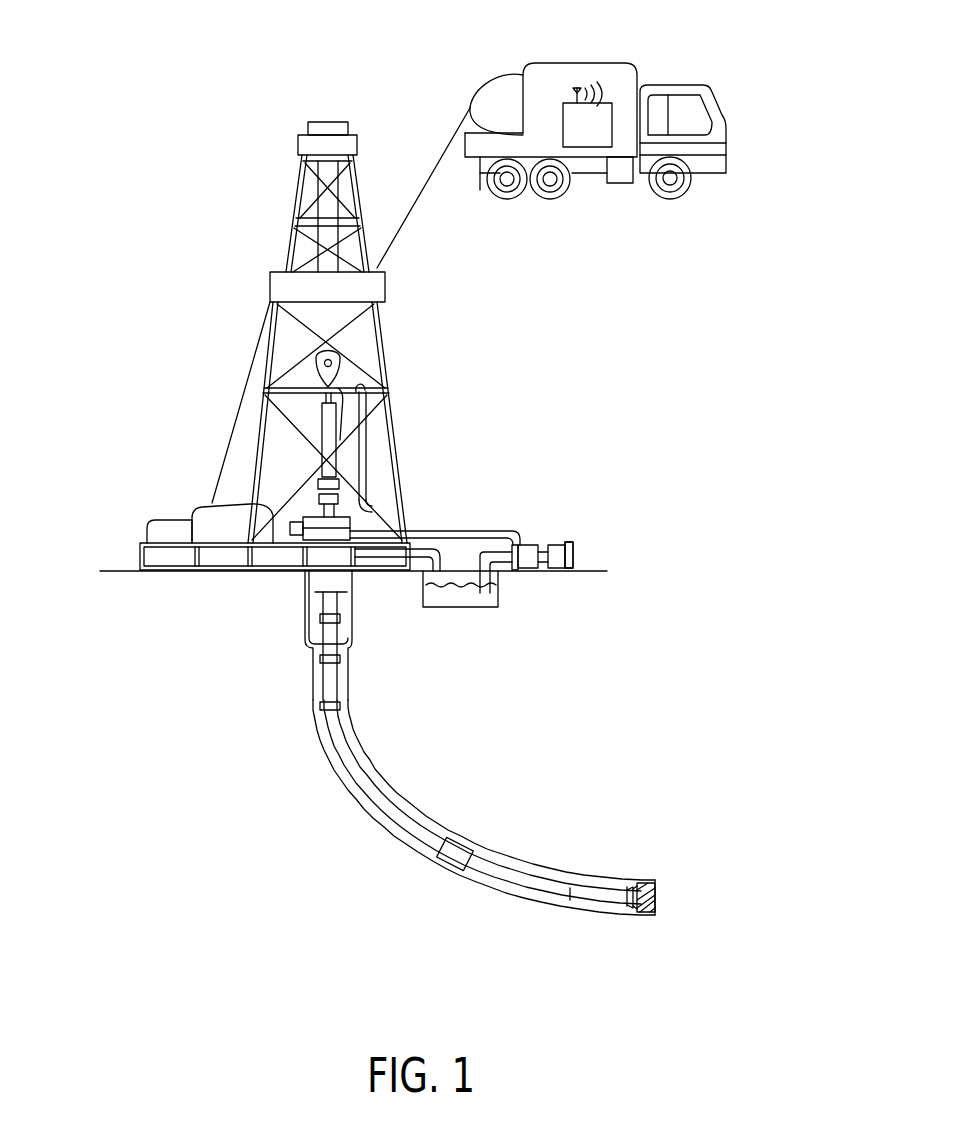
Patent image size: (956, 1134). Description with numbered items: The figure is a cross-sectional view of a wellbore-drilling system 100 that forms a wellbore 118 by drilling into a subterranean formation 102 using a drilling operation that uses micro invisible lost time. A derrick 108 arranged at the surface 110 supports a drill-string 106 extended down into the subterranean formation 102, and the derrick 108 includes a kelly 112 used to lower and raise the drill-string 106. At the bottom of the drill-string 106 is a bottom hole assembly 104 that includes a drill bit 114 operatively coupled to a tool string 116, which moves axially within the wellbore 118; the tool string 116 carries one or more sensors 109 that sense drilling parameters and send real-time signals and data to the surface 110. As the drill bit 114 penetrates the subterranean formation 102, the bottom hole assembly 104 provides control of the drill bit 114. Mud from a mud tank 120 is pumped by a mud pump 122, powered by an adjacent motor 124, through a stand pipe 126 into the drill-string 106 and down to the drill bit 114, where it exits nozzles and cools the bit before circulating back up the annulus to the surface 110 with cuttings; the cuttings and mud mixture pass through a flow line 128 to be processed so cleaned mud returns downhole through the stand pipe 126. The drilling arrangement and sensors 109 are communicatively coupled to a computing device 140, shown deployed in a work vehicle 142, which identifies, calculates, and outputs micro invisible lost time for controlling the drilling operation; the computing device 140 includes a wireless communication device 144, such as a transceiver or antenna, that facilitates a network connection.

The wellbore-drilling system 100 is at (572, 335).
The subterranean formation 102 is at (128, 755).
The bottom hole assembly 104 is at (600, 885).
The drill-string 106 is at (334, 752).
The derrick 108 is at (270, 350).
The sensors 109 is at (448, 885).
The surface 110 is at (108, 567).
The kelly 112 is at (337, 363).
The drill bit 114 is at (655, 893).
The tool string 116 is at (526, 820).
The wellbore 118 is at (313, 727).
The mud tank 120 is at (465, 597).
The mud pump 122 is at (526, 545).
The motor 124 is at (565, 555).
The stand pipe 126 is at (370, 452).
The flow line 128 is at (438, 548).
The computing device 140 is at (568, 125).
The work vehicle 142 is at (718, 166).
The communication device 144 is at (590, 66).